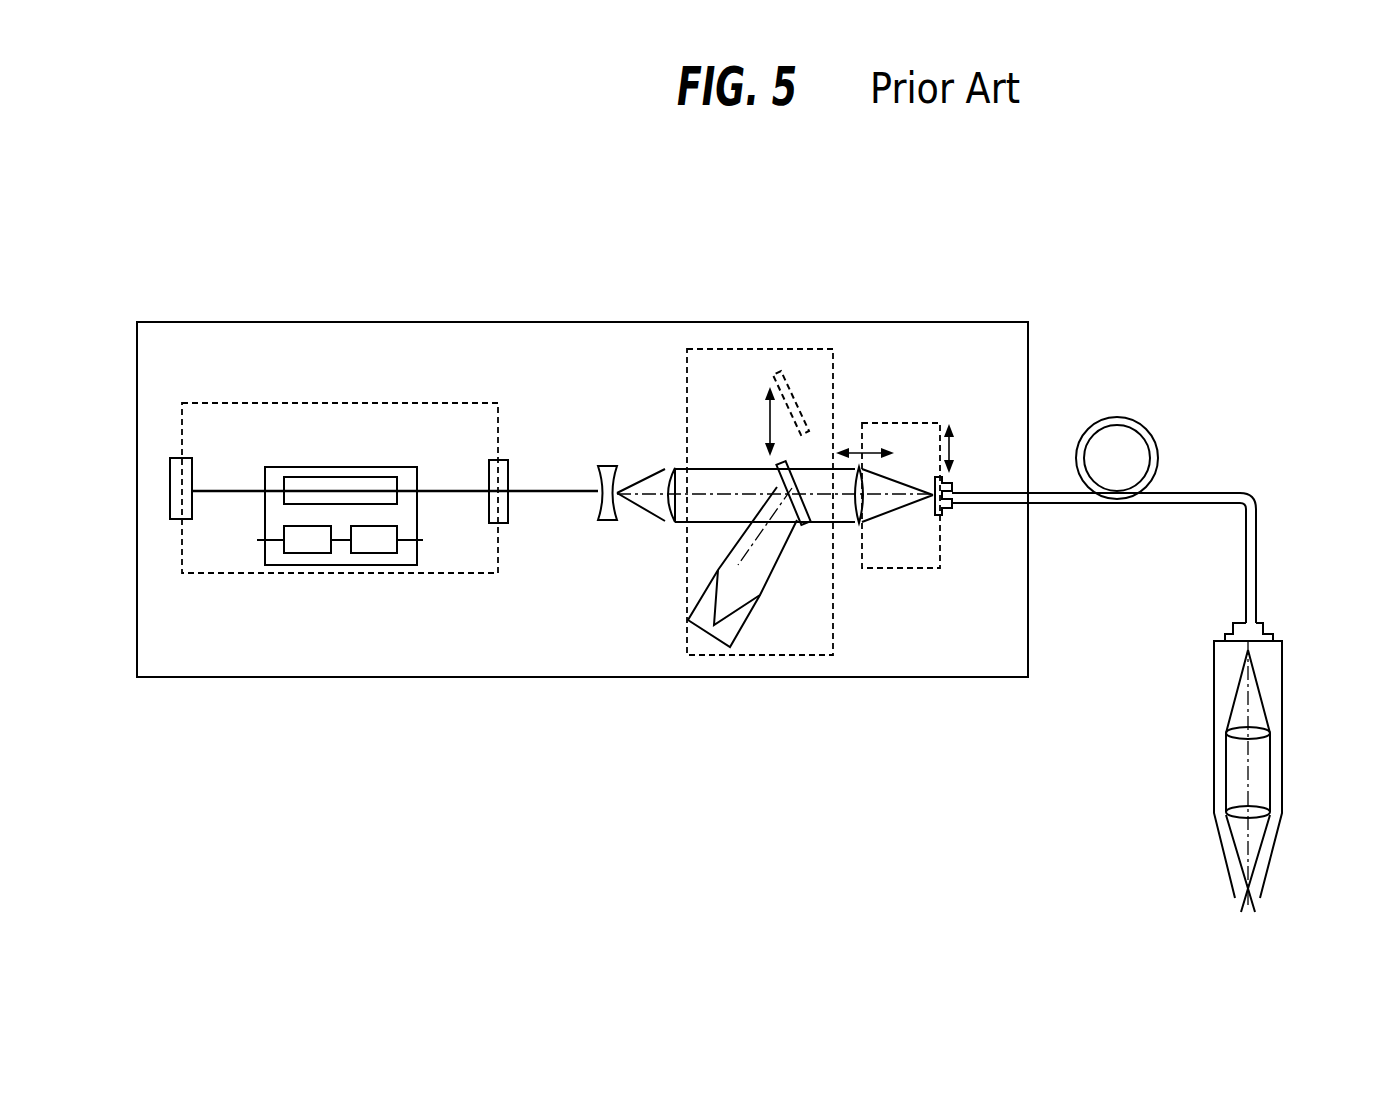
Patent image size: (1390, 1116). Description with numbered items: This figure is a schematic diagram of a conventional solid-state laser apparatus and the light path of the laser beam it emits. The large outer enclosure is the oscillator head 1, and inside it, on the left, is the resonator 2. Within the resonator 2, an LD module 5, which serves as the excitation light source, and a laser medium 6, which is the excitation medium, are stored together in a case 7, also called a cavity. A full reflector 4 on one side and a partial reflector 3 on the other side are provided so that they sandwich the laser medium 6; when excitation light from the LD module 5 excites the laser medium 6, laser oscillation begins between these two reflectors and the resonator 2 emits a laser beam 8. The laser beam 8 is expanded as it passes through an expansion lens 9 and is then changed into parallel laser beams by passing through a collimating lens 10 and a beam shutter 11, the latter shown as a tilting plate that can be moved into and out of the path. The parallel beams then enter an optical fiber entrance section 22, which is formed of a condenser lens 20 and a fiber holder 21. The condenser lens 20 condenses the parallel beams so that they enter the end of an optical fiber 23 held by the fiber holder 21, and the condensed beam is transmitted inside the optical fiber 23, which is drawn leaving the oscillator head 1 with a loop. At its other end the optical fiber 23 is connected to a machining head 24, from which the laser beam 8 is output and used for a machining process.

The oscillator head 1 is at (591, 314).
The resonator 2 is at (275, 398).
The partial reflector 3 is at (499, 460).
The full reflector 4 is at (179, 458).
The LD module 5 is at (303, 553).
The laser medium 6 is at (378, 477).
The case 7 is at (346, 460).
The laser beam 8 is at (540, 496).
The expansion lens 9 is at (605, 521).
The collimating lens 10 is at (670, 468).
The beam shutter 11 is at (768, 342).
The condenser lens 20 is at (860, 524).
The fiber holder 21 is at (943, 514).
The optical fiber entrance section 22 is at (908, 416).
The optical fiber 23 is at (1050, 492).
The machining head 24 is at (1292, 686).